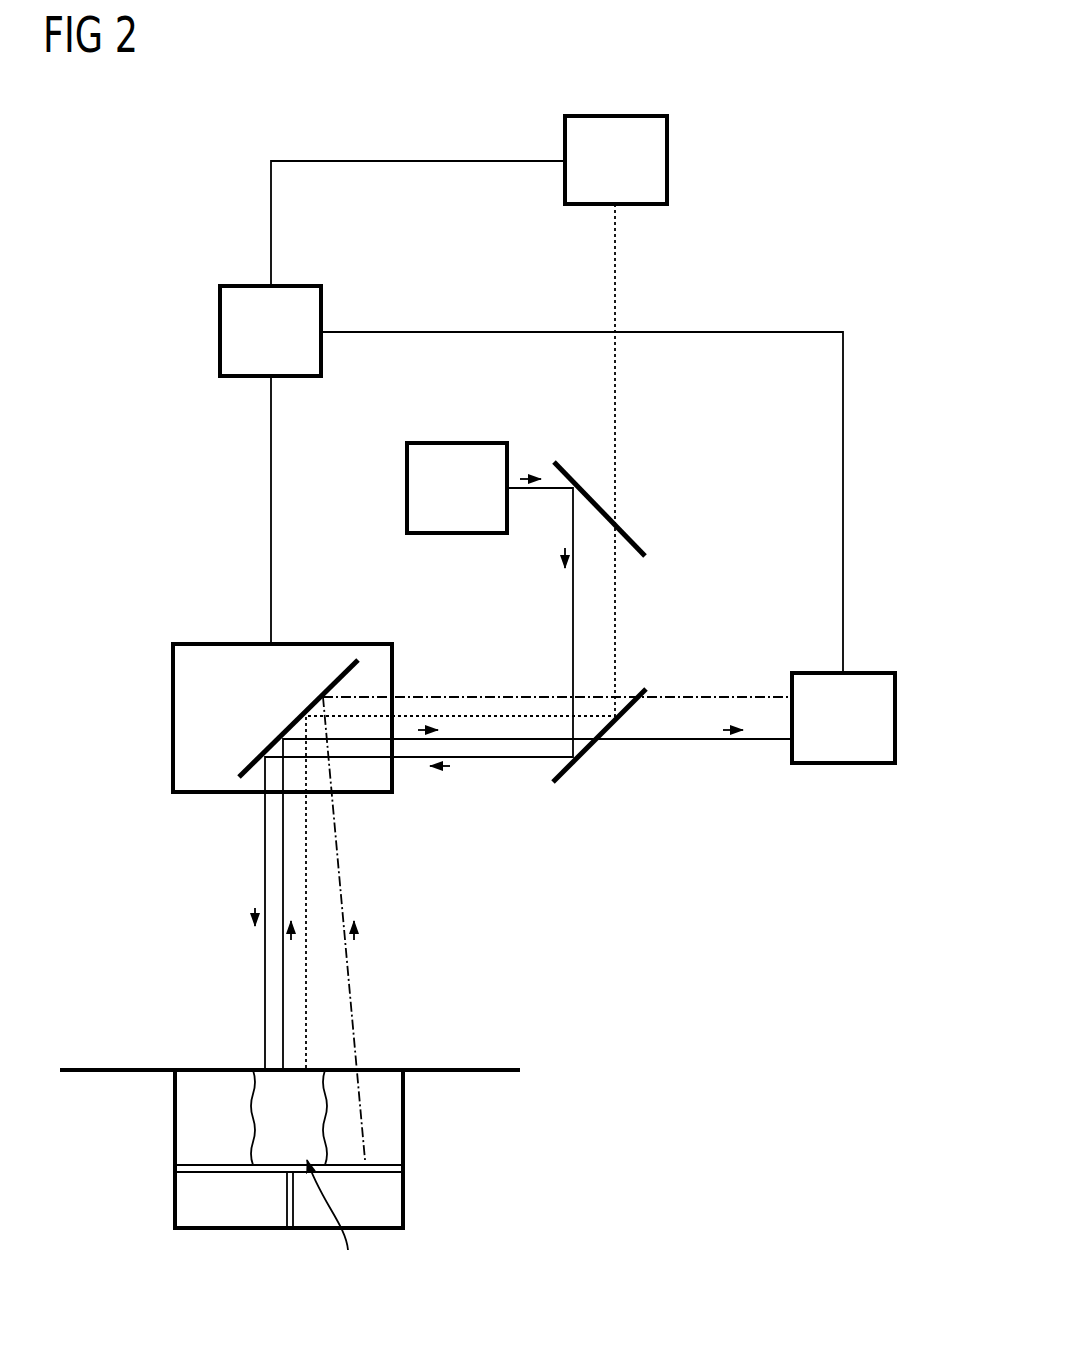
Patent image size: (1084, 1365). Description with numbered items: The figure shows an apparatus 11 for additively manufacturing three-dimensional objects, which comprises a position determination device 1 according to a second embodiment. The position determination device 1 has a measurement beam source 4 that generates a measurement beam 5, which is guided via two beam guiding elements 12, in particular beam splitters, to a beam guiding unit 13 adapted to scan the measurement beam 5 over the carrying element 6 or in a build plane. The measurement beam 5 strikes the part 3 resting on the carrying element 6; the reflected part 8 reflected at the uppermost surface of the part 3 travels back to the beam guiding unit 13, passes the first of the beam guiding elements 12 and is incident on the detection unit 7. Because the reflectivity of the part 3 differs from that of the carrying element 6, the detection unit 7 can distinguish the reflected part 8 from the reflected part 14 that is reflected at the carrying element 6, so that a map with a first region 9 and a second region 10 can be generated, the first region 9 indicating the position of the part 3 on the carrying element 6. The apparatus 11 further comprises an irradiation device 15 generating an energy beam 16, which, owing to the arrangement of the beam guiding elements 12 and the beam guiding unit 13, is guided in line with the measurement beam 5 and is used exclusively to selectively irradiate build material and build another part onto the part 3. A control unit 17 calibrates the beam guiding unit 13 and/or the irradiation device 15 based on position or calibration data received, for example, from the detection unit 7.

The position determination device 1 is at (248, 128).
The part 3 is at (312, 1067).
The measurement beam source 4 is at (407, 487).
The measurement beam 5 is at (573, 612).
The carrying element 6 is at (210, 1168).
The detection unit 7 is at (895, 717).
The reflected part 8 is at (283, 855).
The first region 9 is at (258, 1057).
The second region 10 is at (208, 1052).
The apparatus 11 is at (178, 227).
The beam guiding element 12 is at (630, 531).
The beam guiding unit 13 is at (173, 717).
The reflected part 14 is at (707, 697).
The irradiation device 15 is at (647, 98).
The energy beam 16 is at (615, 272).
The control unit 17 is at (220, 331).